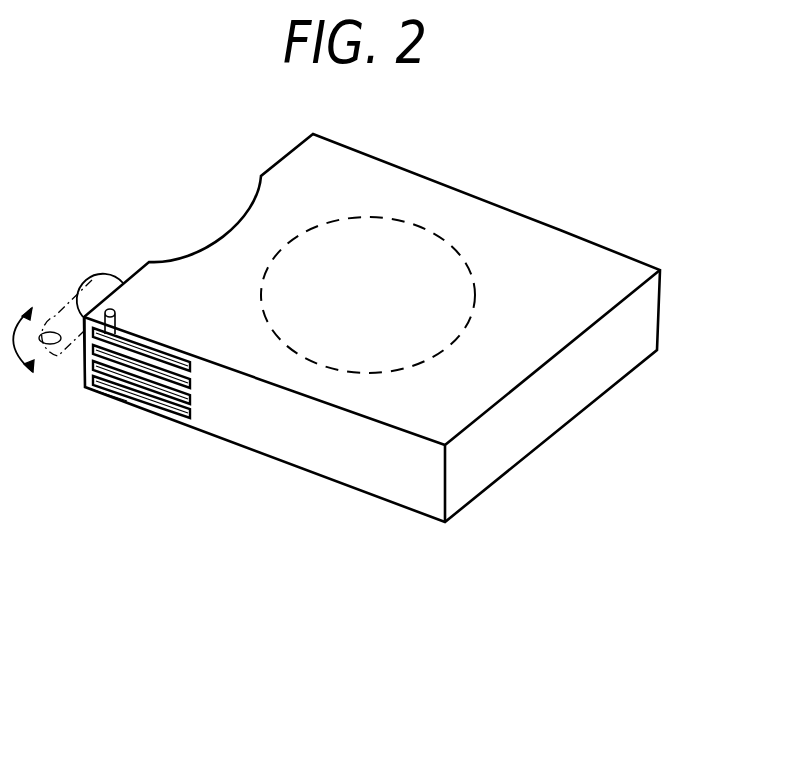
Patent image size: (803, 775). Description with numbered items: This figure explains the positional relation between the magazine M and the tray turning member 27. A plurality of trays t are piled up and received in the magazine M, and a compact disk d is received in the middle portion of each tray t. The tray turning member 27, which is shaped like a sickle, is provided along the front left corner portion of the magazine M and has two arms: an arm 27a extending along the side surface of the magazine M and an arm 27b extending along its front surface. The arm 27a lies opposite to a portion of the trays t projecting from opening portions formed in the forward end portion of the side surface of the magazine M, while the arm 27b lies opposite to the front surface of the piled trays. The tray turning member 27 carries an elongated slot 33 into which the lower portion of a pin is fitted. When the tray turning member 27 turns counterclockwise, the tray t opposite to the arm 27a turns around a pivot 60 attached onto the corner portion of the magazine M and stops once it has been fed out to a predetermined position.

The magazine M is at (502, 380).
The compact disk d is at (437, 228).
The trays t is at (177, 353).
The tray turning member 27 is at (117, 334).
The arm 27a is at (112, 335).
The arm 27b is at (68, 287).
The elongated slot 33 is at (80, 343).
The pivot 60 is at (113, 309).